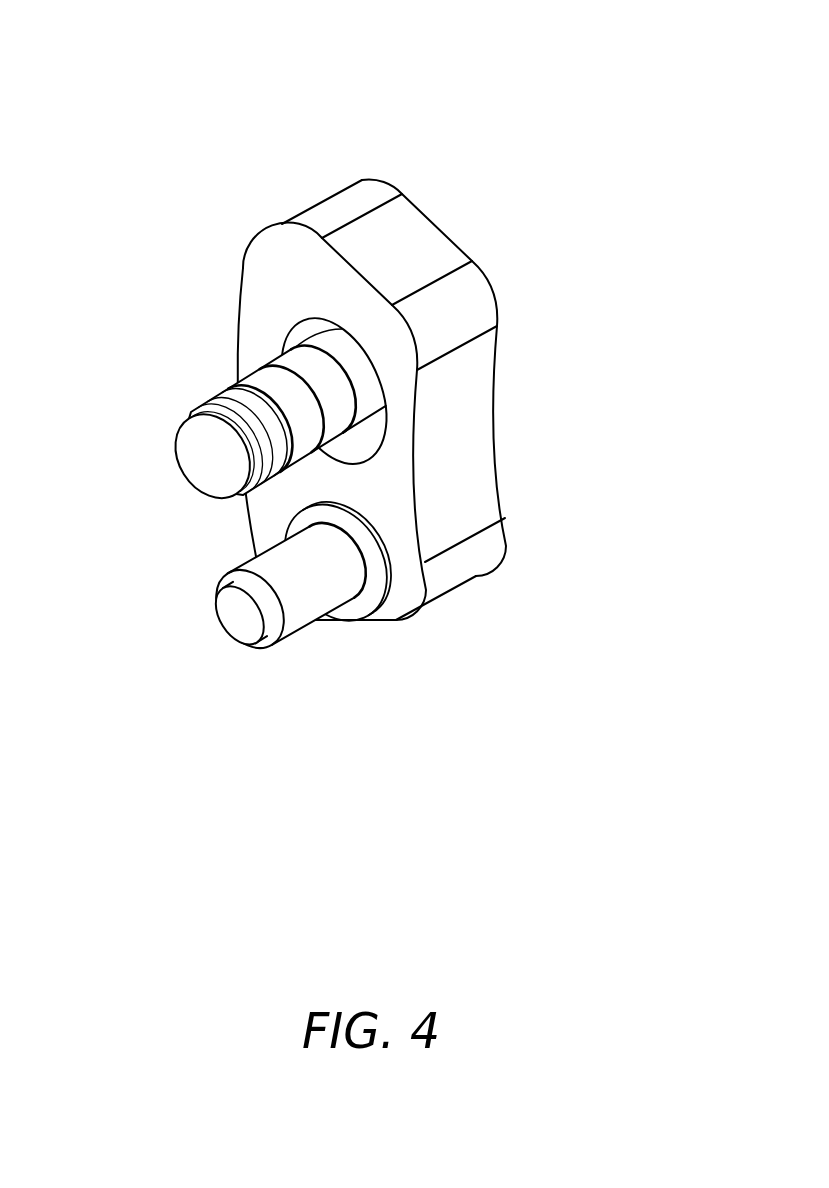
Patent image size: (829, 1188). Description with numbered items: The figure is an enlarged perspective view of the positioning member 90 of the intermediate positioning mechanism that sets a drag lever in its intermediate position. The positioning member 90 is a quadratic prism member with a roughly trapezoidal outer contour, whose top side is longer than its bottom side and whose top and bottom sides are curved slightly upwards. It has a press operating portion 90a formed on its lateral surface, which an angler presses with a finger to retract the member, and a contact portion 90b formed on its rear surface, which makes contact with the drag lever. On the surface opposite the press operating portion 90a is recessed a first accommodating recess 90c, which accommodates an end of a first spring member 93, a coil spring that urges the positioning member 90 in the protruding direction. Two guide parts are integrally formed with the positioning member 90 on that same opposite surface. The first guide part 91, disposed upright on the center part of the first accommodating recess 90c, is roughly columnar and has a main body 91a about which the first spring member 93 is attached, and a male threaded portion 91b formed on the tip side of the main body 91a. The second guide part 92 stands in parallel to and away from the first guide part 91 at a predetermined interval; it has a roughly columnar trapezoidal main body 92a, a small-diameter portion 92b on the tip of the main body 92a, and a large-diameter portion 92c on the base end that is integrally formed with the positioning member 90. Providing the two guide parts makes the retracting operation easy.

The positioning member 90 is at (427, 317).
The press operating portion 90a is at (493, 427).
The contact portion 90b is at (410, 258).
The first accommodating recess 90c is at (293, 346).
The first guide part 91 is at (218, 353).
The main body 91a is at (280, 368).
The male threaded portion 91b is at (198, 402).
The first spring member 93 is at (230, 381).
The second guide part 92 is at (296, 666).
The main body 92a is at (313, 603).
The small-diameter portion 92b is at (267, 622).
The large-diameter portion 92c is at (376, 591).